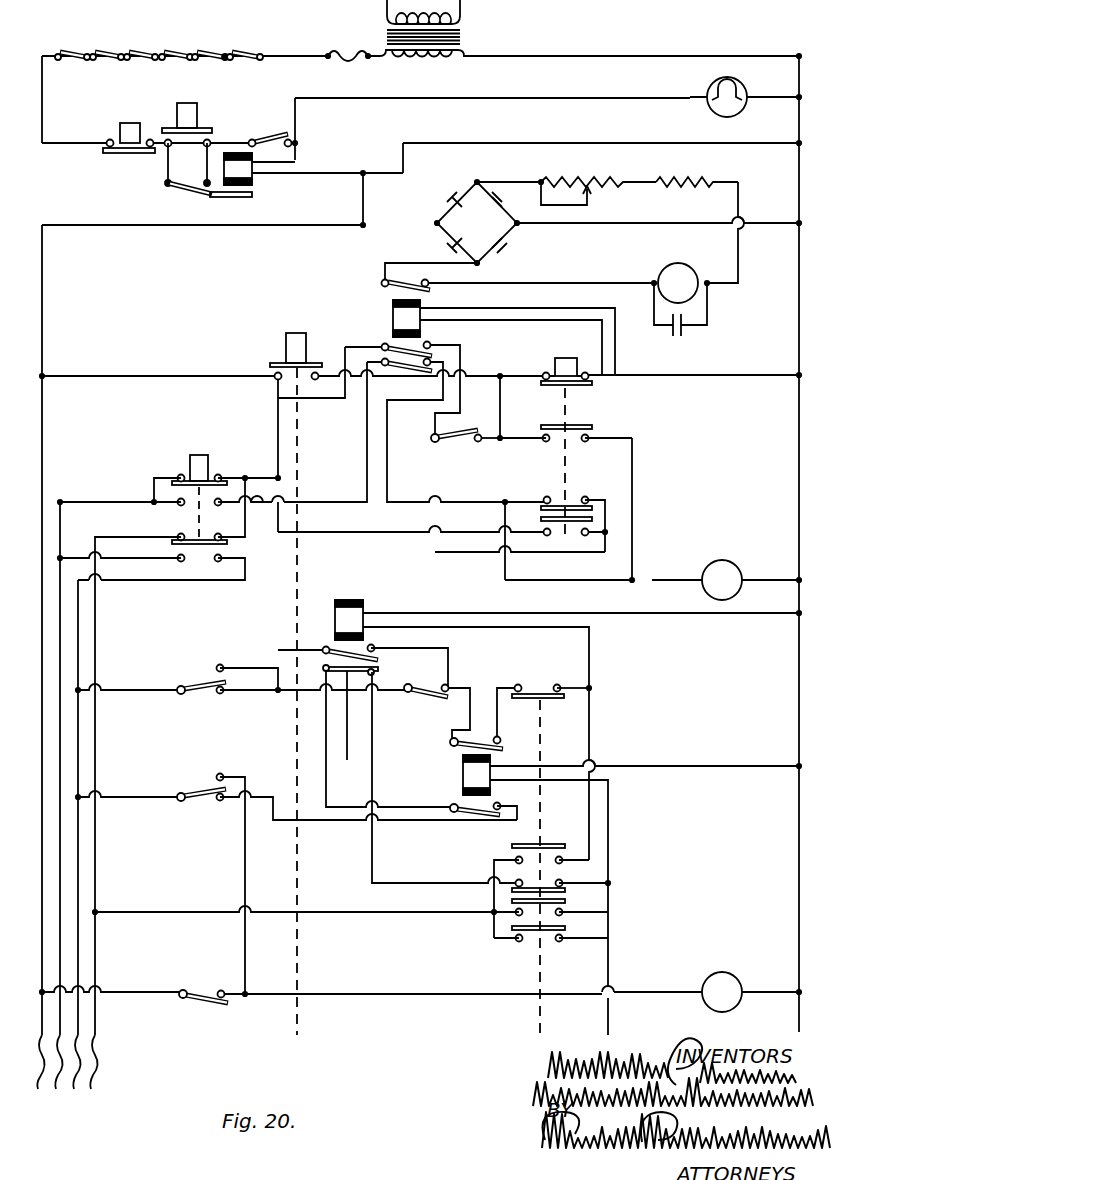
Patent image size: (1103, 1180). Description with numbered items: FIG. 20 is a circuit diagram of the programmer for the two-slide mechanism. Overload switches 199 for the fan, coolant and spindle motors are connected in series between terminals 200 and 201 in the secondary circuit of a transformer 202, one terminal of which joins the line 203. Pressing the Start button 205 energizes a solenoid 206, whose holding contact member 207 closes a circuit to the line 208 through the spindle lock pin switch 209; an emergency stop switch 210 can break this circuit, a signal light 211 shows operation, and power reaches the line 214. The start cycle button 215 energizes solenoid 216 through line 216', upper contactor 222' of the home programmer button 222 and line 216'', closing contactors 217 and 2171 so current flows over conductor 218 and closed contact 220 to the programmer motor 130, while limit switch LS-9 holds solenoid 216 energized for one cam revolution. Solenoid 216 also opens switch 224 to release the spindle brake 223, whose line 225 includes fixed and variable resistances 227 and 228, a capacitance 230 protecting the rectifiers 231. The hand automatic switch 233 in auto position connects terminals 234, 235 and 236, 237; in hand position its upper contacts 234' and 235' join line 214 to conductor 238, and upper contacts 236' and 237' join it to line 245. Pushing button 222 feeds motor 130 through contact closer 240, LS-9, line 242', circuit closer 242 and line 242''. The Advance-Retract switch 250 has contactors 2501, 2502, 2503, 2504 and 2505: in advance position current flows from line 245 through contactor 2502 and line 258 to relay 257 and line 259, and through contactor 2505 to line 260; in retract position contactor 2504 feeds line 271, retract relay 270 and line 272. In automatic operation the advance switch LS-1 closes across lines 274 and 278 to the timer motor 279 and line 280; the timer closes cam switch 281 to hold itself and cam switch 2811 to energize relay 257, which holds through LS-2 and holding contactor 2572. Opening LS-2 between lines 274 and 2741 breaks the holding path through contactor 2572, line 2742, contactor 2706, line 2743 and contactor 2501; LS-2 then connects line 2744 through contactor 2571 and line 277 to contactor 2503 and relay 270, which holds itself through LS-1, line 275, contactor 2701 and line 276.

The overload switches 199 is at (227, 48).
The terminal 200 is at (56, 55).
The terminal 201 is at (290, 26).
The transformer 202 is at (466, 33).
The line 203 is at (720, 56).
The Start button 205 is at (196, 110).
The solenoid 206 is at (258, 180).
The holding contact member 207 is at (226, 198).
The line 208 is at (224, 142).
The spindle lock pin switch 209 is at (278, 140).
The emergency stop switch 210 is at (122, 132).
The signal light 211 is at (710, 92).
The line 214 is at (76, 228).
The start cycle button 215 is at (288, 350).
The solenoid 216 is at (380, 318).
The line 216' is at (517, 329).
The line 216'' is at (692, 392).
The contactor 217 is at (395, 346).
The contactor 2171 is at (390, 382).
The conductor 218 is at (448, 364).
The contact 220 is at (578, 500).
The home programmer button 222 is at (543, 359).
The upper contactor 222' is at (601, 460).
The electric spindle brake 223 is at (688, 272).
The switch 224 is at (416, 274).
The line 225 is at (588, 286).
The fixed resistance 227 is at (688, 186).
The variable resistance 228 is at (588, 180).
The capacitance 230 is at (676, 362).
The rectifiers 231 is at (428, 160).
The hand automatic switch 233 is at (190, 462).
The terminal 234 is at (122, 517).
The upper contact 234' is at (150, 482).
The terminal 235 is at (228, 517).
The upper contact 235' is at (247, 468).
The terminal 236 is at (126, 590).
The upper contact 236' is at (161, 785).
The terminal 237 is at (171, 587).
The upper contact 237' is at (254, 521).
The conductor 238 is at (98, 502).
The contact closer 240 is at (566, 522).
The circuit closer 242 is at (572, 417).
The line 242' is at (512, 396).
The line 242'' is at (669, 509).
The line 245 is at (104, 544).
The Advance-Retract switch 250 is at (566, 664).
The contactor 2501 is at (570, 698).
The contactor 2502 is at (558, 856).
The contactor 2503 is at (568, 890).
The contactor 2504 is at (568, 902).
The contactor 2505 is at (568, 930).
The relay 257 is at (360, 590).
The contactor 2571 is at (342, 686).
The holding contactor 2572 is at (336, 652).
The line 258 is at (590, 638).
The line 259 is at (700, 622).
The line 260 is at (610, 1024).
The Retract relay 270 is at (463, 776).
The contactor 2701 is at (462, 806).
The relay switch 2706 is at (456, 748).
The line 271 is at (608, 854).
The line 272 is at (730, 774).
The line 274 is at (78, 638).
The line 2741 is at (224, 694).
The line 2742 is at (464, 678).
The line 2743 is at (502, 696).
The line 2744 is at (254, 678).
The line 275 is at (310, 822).
The line 276 is at (264, 766).
The line 277 is at (372, 742).
The line 278 is at (264, 934).
The timer motor 279 is at (716, 982).
The line 280 is at (786, 990).
The cam switch 281 is at (210, 966).
The cam switch 2811 is at (430, 696).
The programmer motor 130 is at (738, 568).
The Advance switch LS-1 is at (192, 796).
The Retract switch LS-2 is at (202, 682).
The limit switch LS-9 is at (442, 444).